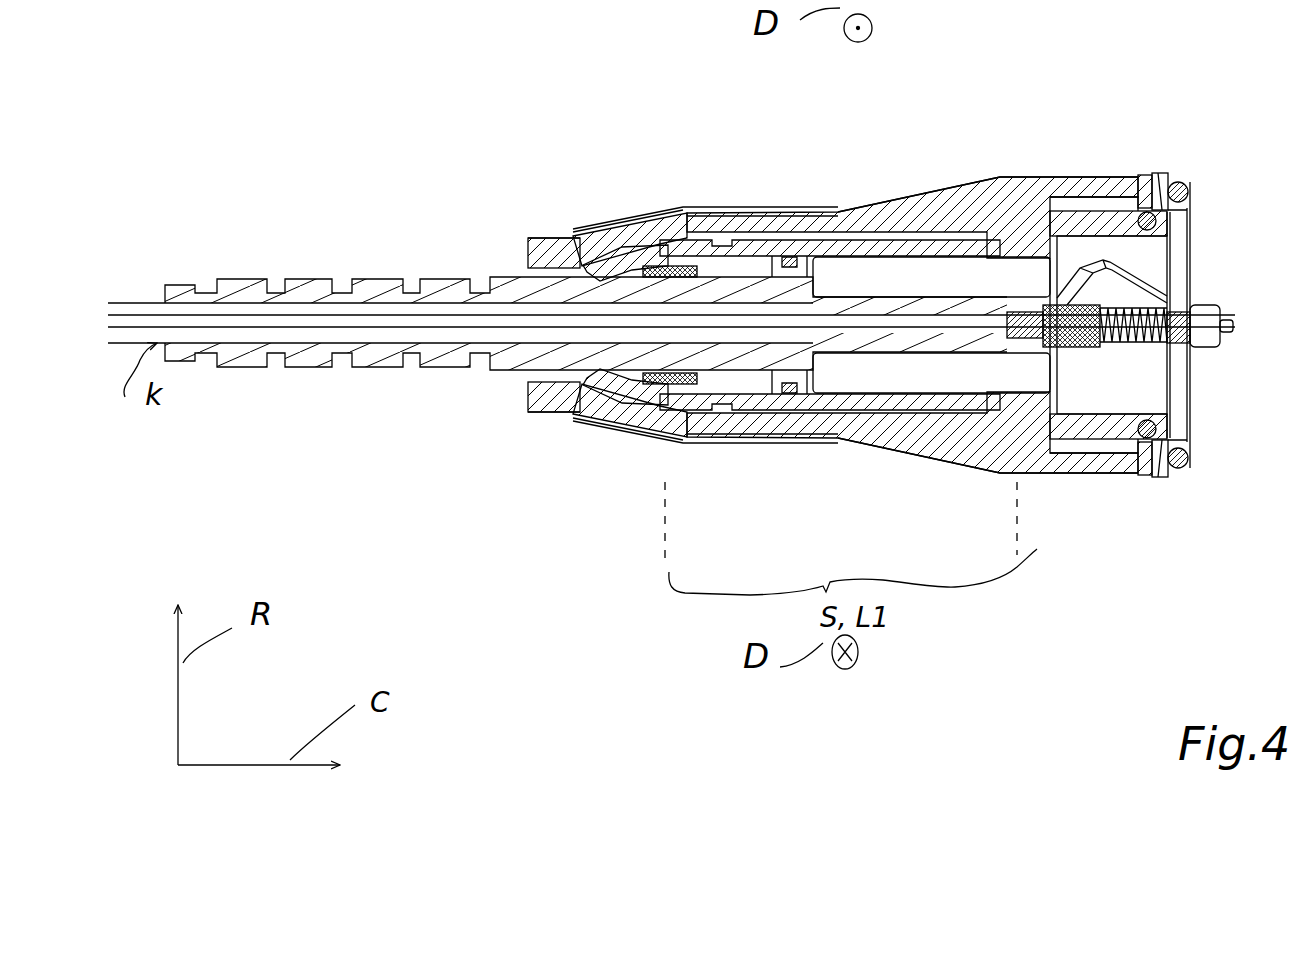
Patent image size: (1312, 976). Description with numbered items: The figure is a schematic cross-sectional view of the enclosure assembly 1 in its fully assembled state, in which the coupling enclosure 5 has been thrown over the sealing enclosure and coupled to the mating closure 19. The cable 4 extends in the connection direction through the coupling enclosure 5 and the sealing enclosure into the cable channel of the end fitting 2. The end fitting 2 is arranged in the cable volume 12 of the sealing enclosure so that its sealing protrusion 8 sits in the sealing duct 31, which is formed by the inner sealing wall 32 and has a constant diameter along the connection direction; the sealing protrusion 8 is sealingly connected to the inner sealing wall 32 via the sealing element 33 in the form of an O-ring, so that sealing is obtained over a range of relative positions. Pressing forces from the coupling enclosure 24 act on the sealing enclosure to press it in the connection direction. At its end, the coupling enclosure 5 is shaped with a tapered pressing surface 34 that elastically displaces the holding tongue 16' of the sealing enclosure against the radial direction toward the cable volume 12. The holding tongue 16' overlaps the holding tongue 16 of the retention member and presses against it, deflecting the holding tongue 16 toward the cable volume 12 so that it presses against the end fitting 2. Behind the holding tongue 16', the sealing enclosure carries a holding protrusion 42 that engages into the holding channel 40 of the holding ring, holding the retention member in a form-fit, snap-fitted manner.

The enclosure assembly 1 is at (420, 533).
The end fitting 2 is at (565, 400).
The cable 4 is at (125, 302).
The coupling enclosure 5 is at (553, 238).
The sealing protrusion 8 is at (940, 278).
The cable volume 12 is at (1210, 388).
The holding tongue 16 is at (502, 276).
The holding tongue 16' is at (617, 317).
The mating closure 19 is at (1163, 173).
The coupling enclosure 24 is at (1007, 200).
The sealing duct 31 is at (943, 277).
The inner sealing wall 32 is at (825, 268).
The sealing element 33 is at (793, 244).
The tapered pressing surface 34 is at (558, 238).
The holding channel 40 is at (697, 408).
The holding protrusion 42 is at (673, 228).